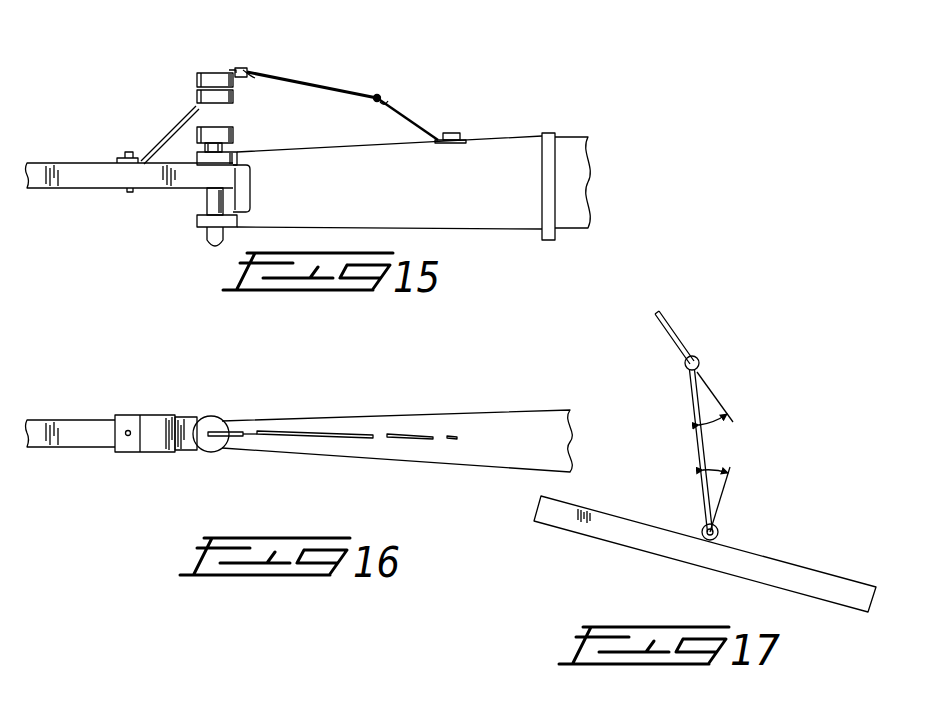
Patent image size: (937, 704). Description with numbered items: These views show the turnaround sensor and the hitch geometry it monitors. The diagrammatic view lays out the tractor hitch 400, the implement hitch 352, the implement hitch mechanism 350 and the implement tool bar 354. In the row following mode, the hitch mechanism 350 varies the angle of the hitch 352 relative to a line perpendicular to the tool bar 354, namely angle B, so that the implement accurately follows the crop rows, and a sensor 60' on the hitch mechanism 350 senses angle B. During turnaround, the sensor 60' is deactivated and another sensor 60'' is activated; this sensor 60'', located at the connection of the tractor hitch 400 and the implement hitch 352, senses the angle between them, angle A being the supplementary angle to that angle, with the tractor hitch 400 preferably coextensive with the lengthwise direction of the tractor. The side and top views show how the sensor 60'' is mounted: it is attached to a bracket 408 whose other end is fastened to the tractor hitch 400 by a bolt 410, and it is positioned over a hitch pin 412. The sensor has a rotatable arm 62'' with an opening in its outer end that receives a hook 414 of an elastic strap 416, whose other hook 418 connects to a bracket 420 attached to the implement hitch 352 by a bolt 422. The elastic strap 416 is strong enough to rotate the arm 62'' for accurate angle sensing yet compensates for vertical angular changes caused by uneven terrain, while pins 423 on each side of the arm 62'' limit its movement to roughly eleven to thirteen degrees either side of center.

In FIG. 15, the tractor hitch 400 is at (80, 190).
In FIG. 16, the tractor hitch 400 is at (85, 420).
In FIG. 17, the tractor hitch 400 is at (670, 323).
In FIG. 15, the bracket 408 is at (155, 150).
In FIG. 16, the bracket 408 is at (165, 415).
In FIG. 15, the bolt 410 is at (125, 155).
In FIG. 15, the hitch pin 412 is at (234, 131).
In FIG. 15, the hook 414 is at (263, 76).
In FIG. 15, the elastic strap 416 is at (340, 86).
In FIG. 15, the hook 418 is at (388, 101).
In FIG. 15, the bracket 420 is at (418, 118).
In FIG. 15, the bolt 422 is at (454, 133).
In FIG. 15, the pins 423 is at (232, 70).
In FIG. 16, the pins 423 is at (230, 420).
In FIG. 15, the implement hitch 352 is at (503, 140).
In FIG. 16, the implement hitch 352 is at (408, 417).
In FIG. 17, the implement hitch 352 is at (698, 455).
In FIG. 17, the implement hitch mechanism 350 is at (700, 528).
In FIG. 17, the implement tool bar 354 is at (797, 575).
In FIG. 15, the sensor 60'' is at (205, 61).
In FIG. 16, the sensor 60'' is at (203, 406).
In FIG. 17, the sensor 60'' is at (656, 376).
In FIG. 17, the sensor 60' is at (741, 525).
In FIG. 15, the rotatable arm 62'' is at (271, 57).
In FIG. 16, the rotatable arm 62'' is at (349, 414).
In FIG. 17, the angle A is at (715, 414).
In FIG. 17, the angle B is at (724, 499).